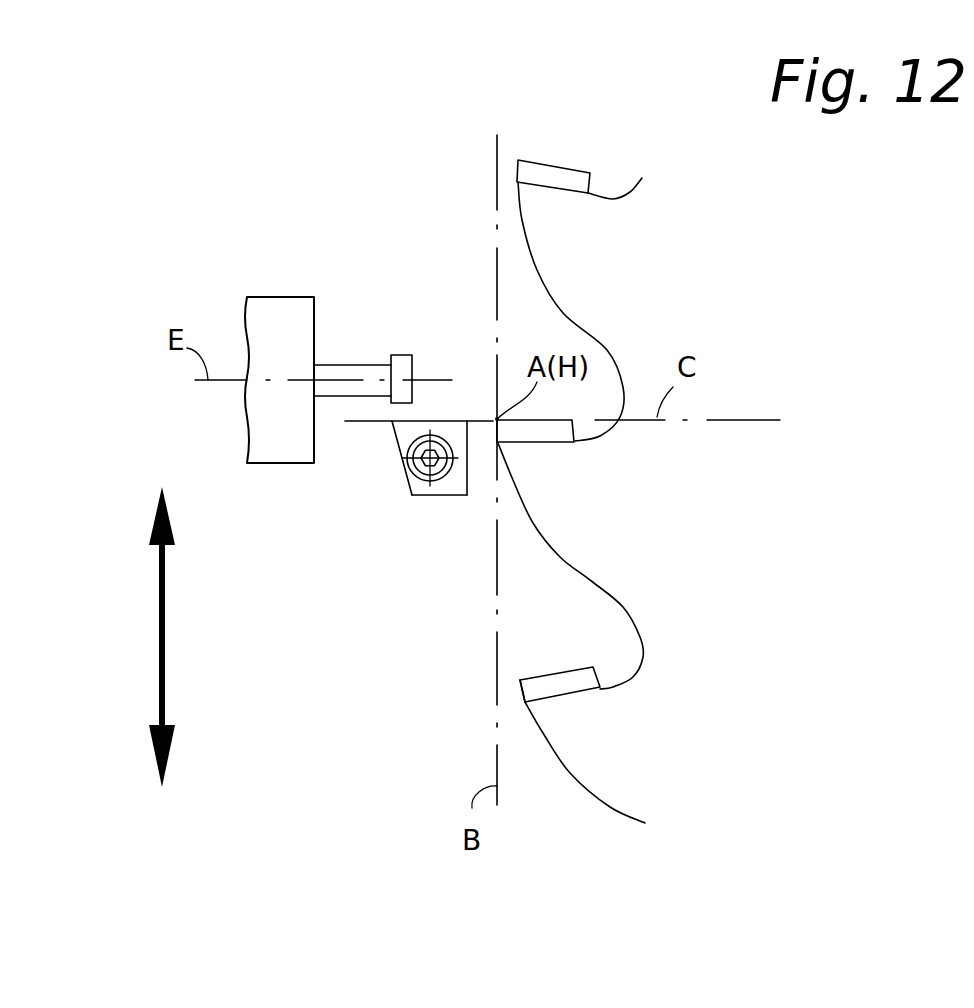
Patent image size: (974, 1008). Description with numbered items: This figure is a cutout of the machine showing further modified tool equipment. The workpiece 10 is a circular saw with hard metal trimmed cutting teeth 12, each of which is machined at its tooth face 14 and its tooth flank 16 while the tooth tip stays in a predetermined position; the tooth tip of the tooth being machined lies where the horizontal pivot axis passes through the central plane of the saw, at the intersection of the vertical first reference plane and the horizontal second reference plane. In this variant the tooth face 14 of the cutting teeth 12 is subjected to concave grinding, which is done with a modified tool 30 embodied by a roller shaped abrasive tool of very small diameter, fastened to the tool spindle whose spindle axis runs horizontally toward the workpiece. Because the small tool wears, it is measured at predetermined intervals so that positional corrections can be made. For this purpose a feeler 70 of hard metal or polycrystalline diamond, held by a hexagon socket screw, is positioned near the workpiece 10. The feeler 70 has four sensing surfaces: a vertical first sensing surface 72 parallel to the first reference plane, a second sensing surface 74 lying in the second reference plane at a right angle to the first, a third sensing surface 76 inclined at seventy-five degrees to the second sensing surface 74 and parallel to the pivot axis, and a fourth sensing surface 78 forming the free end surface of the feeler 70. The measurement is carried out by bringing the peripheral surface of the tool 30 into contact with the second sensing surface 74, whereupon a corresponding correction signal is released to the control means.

The workpiece 10 is at (586, 824).
The cutting tooth 12 is at (567, 733).
The tooth face 14 is at (547, 675).
The tooth flank 16 is at (516, 693).
The tool 30 is at (394, 338).
The feeler 70 is at (386, 502).
The first sensing surface 72 is at (468, 477).
The second sensing surface 74 is at (447, 420).
The third sensing surface 76 is at (390, 442).
The fourth sensing surface 78 is at (447, 485).